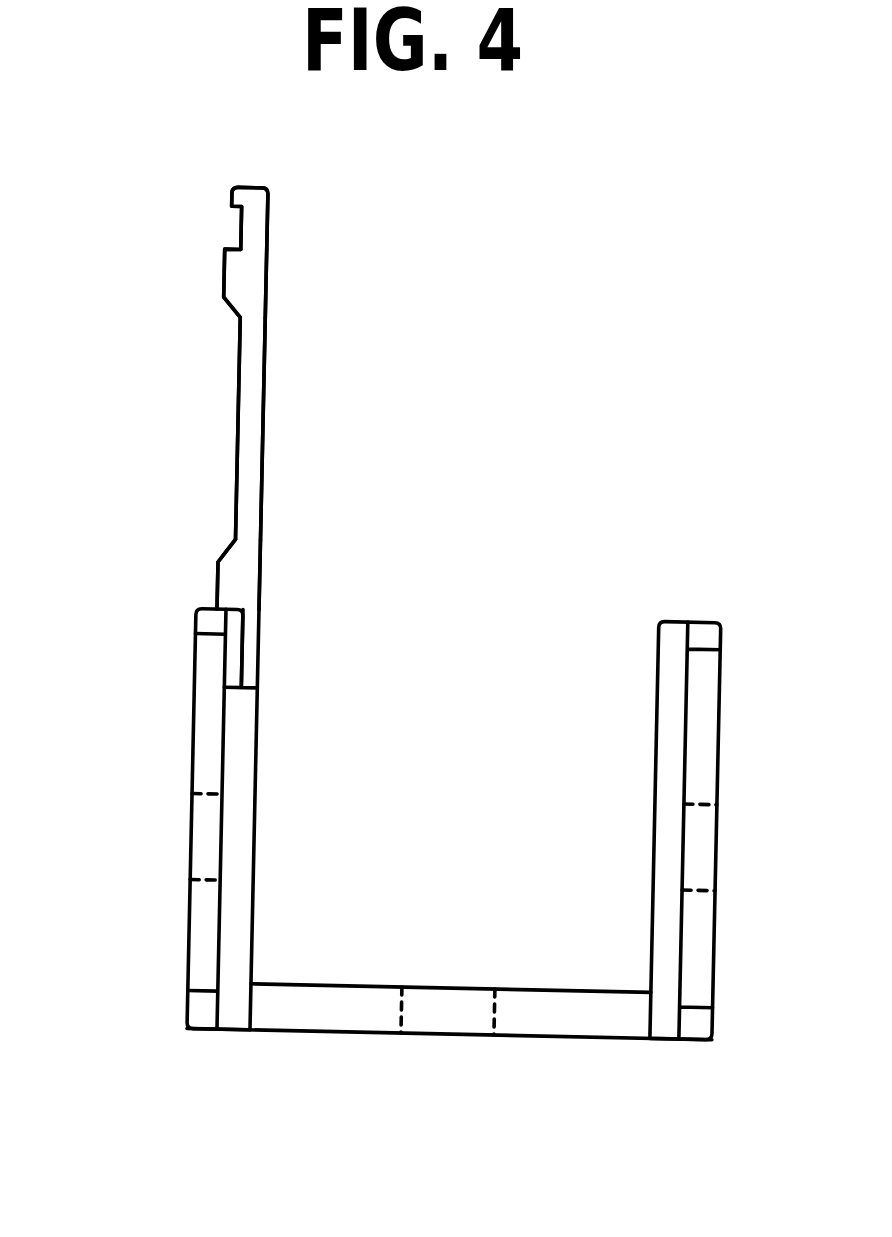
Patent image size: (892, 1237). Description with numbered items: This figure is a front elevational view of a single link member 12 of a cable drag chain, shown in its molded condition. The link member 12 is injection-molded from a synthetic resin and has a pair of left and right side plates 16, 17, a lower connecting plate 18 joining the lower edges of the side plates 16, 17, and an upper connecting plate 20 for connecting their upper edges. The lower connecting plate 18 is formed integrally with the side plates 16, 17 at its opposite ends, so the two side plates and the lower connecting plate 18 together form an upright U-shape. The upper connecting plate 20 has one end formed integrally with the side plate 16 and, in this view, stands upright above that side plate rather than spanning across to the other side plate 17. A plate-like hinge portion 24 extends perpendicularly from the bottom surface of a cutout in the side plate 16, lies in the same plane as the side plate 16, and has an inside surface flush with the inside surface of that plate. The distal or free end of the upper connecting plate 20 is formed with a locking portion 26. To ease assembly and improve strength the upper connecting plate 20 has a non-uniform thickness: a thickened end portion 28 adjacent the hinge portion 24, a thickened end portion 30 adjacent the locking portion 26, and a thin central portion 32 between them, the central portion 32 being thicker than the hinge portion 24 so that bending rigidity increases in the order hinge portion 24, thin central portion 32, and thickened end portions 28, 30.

The link member 12 is at (455, 785).
The side plate 16 is at (202, 935).
The side plate 17 is at (697, 942).
The lower connecting plate 18 is at (333, 1013).
The upper connecting plate 20 is at (265, 437).
The hinge portion 24 is at (250, 648).
The locking portion 26 is at (257, 225).
The thickened end portion 28 is at (235, 578).
The thickened end portion 30 is at (223, 273).
The thin central portion 32 is at (237, 405).